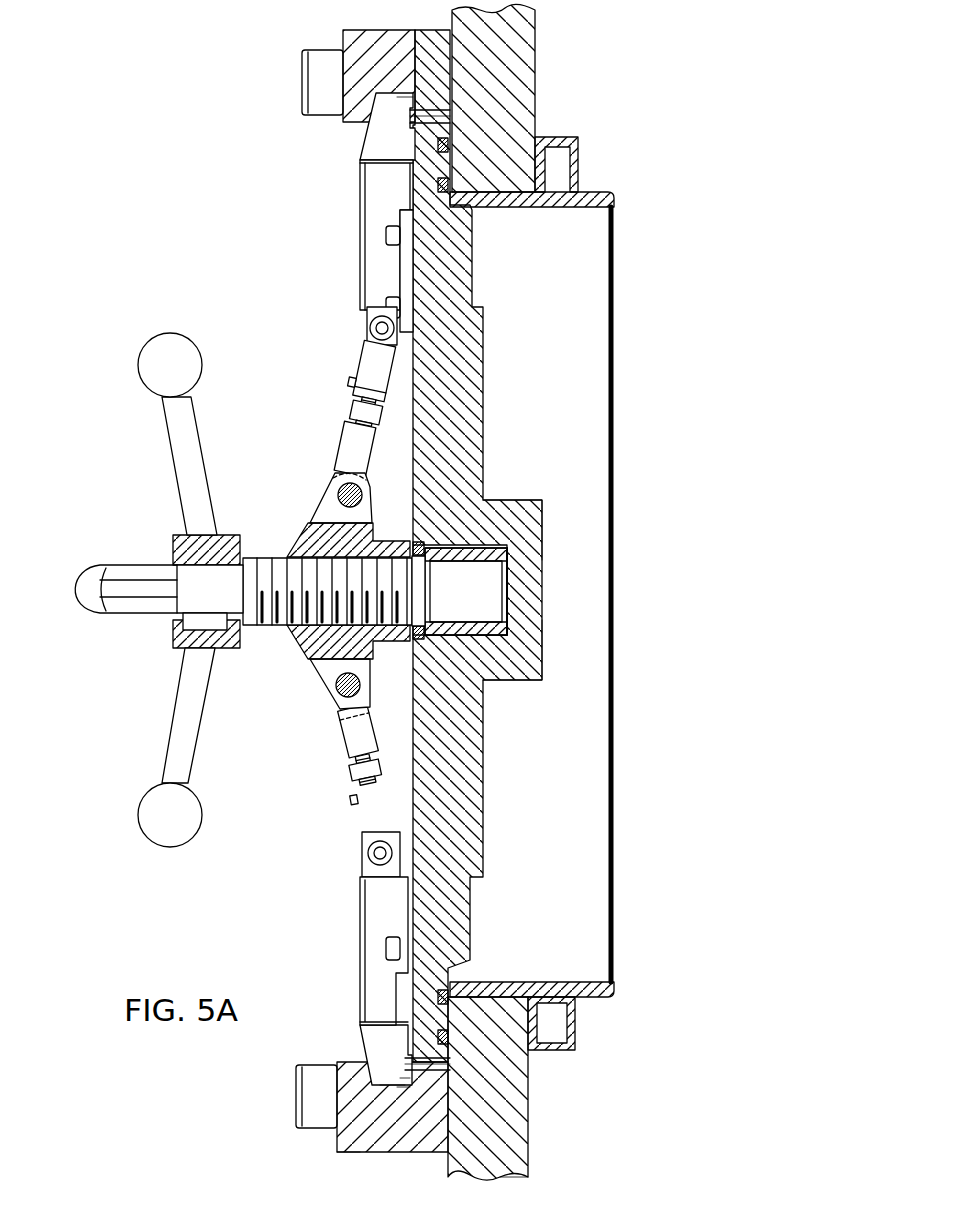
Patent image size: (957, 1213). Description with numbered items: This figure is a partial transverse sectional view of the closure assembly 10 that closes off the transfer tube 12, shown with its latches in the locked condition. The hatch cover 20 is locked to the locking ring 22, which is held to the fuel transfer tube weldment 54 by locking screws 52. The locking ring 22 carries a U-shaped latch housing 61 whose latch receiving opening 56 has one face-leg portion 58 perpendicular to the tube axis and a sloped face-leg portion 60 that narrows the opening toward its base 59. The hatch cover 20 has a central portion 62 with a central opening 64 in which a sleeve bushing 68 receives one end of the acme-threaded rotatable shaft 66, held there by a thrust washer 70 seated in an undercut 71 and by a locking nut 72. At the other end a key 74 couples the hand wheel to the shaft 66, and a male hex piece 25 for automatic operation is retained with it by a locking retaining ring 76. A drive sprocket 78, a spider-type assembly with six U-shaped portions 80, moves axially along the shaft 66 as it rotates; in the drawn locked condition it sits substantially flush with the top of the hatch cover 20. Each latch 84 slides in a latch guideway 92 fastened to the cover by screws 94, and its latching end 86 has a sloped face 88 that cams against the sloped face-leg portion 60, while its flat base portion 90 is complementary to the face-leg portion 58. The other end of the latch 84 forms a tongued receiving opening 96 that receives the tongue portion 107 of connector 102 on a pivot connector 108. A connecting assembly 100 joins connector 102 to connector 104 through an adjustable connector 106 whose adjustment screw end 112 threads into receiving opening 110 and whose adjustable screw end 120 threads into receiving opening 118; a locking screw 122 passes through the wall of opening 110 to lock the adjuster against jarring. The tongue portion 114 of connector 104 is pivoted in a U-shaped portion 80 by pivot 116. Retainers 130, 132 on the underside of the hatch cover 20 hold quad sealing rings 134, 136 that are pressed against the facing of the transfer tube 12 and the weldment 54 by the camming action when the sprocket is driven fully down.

The closure assembly 10 is at (219, 1135).
The transfer tube 12 is at (563, 990).
The hatch cover 20 is at (540, 591).
The locking ring 22 is at (363, 30).
The male hex piece 25 is at (115, 567).
The locking screws 52 is at (302, 82).
The fuel transfer tube weldment 54 is at (513, 1178).
The latch receiving opening 56 is at (348, 1153).
The face-leg portion 58 is at (413, 110).
The base 59 is at (398, 95).
The sloped face-leg portion 60 is at (388, 1082).
The latch housing 61 is at (393, 1076).
The central portion 62 is at (540, 512).
The central opening 64 is at (485, 622).
The rotatable shaft 66 is at (258, 632).
The sleeve bushing 68 is at (509, 548).
The thrust washer 70 is at (484, 500).
The undercut 71 is at (422, 552).
The locking nut 72 is at (413, 631).
The key 74 is at (194, 623).
The locking retaining ring 76 is at (172, 557).
The drive sprocket 78 is at (300, 542).
The U-shaped portion 80 is at (322, 505).
The latch 84 is at (362, 300).
The latching end 86 is at (376, 146).
The sloped face 88 is at (366, 126).
The base portion 90 is at (417, 114).
The latch guideway 92 is at (359, 224).
The screws 94 is at (384, 948).
The tongued receiving opening 96 is at (371, 331).
The connecting assembly 100 is at (384, 427).
The connector 102 is at (361, 362).
The connector 104 is at (340, 454).
The adjustable connector 106 is at (353, 411).
The tongue portion 107 is at (400, 343).
The pivot connector 108 is at (376, 324).
The internally threaded receiving opening 110 is at (357, 399).
The adjustment screw end 112 is at (386, 398).
The tongue portion 114 is at (373, 490).
The pivot 116 is at (338, 686).
The internally threaded receiving opening 118 is at (377, 754).
The adjustable screw end 120 is at (351, 763).
The locking screw 122 is at (352, 384).
The quad ring retainer 130 is at (436, 993).
The quad ring retainer 132 is at (442, 1036).
The quad sealing ring 134 is at (447, 146).
The quad sealing ring 136 is at (452, 186).